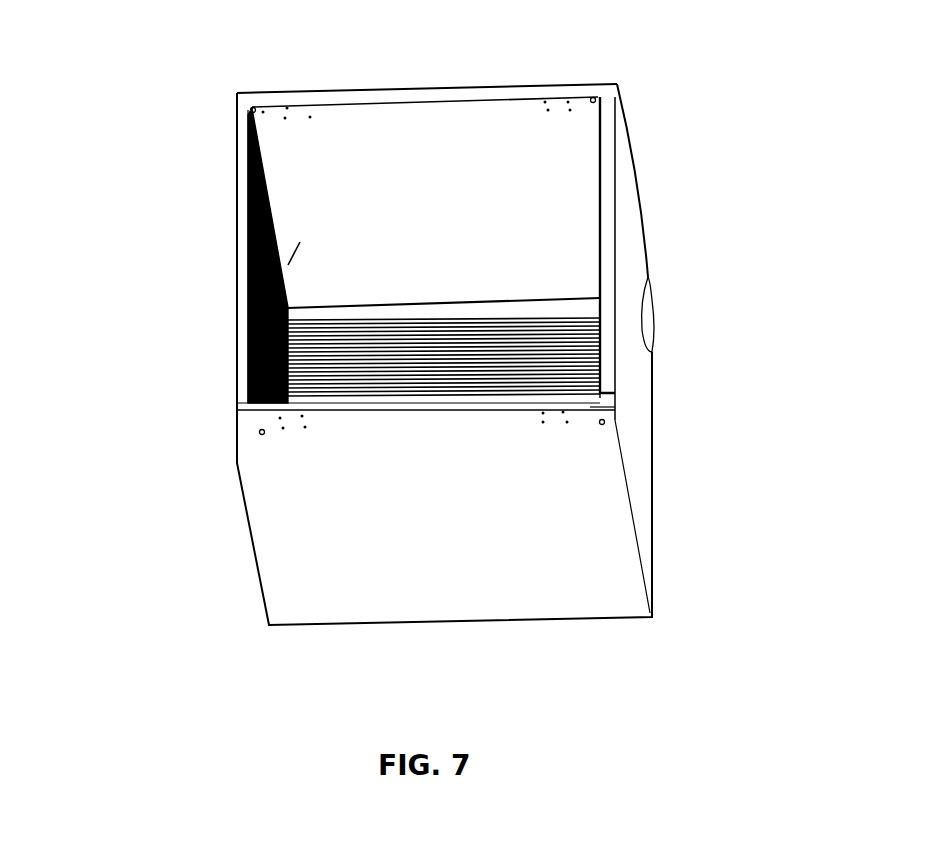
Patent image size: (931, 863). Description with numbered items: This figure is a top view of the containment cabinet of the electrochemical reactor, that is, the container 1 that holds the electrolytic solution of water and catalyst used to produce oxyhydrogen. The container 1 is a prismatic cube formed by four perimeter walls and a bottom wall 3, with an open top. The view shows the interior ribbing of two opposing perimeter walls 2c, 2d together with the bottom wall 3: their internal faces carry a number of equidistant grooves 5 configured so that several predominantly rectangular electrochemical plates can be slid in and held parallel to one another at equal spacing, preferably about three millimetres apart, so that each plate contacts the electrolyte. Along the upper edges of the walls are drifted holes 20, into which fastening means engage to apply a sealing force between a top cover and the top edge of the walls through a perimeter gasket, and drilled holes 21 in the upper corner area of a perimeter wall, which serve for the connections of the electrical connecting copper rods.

The container 1 is at (645, 195).
The perimeter wall 2c is at (622, 337).
The perimeter wall 2d is at (240, 305).
The bottom wall 3 is at (555, 308).
The grooves 5 is at (300, 242).
The drifted holes 20 is at (295, 112).
The drilled holes 21 is at (237, 97).